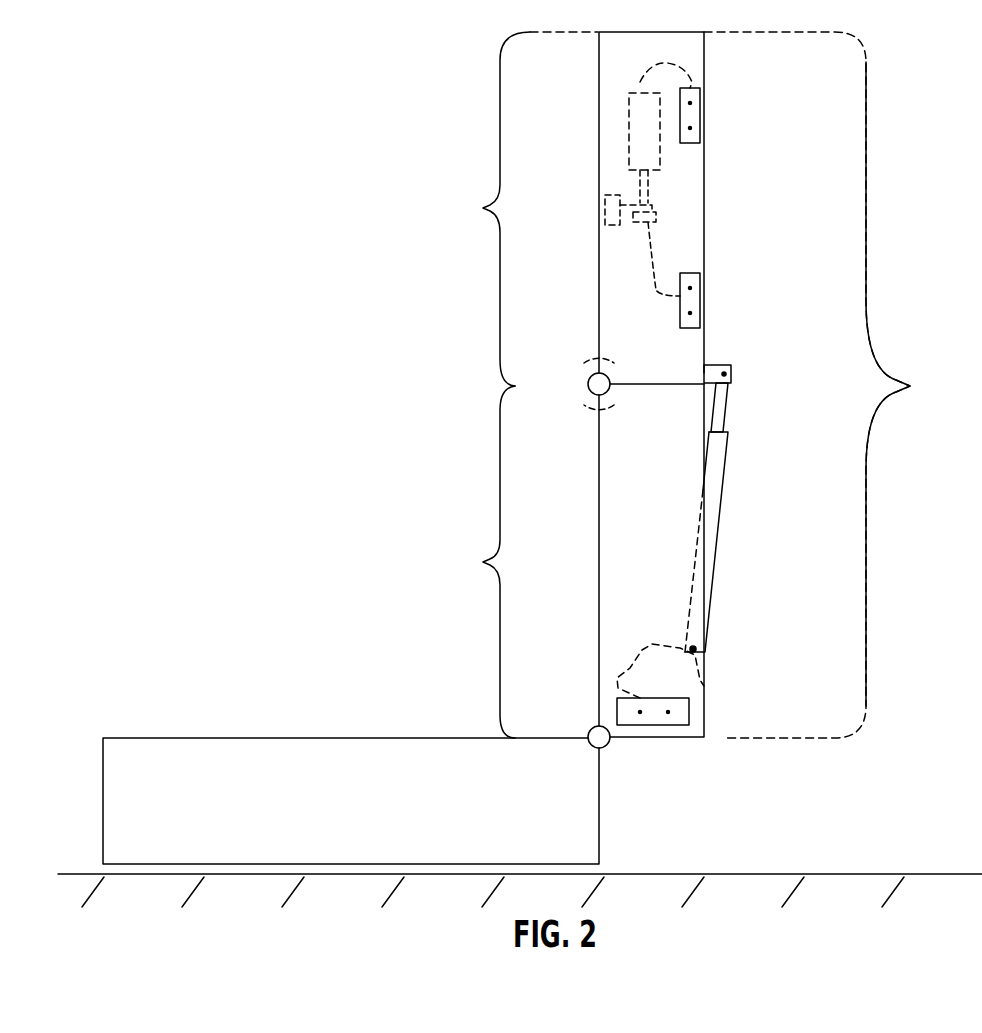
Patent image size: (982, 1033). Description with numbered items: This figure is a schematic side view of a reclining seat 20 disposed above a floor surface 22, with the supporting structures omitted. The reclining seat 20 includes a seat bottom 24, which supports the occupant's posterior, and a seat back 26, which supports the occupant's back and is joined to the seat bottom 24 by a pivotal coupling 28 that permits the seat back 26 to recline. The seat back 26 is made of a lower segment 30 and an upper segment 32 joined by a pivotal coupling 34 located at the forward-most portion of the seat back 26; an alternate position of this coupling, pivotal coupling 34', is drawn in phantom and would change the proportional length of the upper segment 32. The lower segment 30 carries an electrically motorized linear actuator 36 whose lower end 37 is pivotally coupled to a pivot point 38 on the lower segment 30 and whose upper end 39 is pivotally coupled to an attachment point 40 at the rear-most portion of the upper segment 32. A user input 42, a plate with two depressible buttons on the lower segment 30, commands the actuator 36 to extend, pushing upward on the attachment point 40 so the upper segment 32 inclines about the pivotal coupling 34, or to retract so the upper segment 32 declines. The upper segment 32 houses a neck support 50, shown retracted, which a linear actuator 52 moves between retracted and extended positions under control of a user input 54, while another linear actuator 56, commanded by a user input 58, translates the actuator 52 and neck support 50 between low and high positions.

The reclining seat 20 is at (166, 67).
The floor surface 22 is at (868, 873).
The seat bottom 24 is at (277, 737).
The seat back 26 is at (739, 385).
The pivotal coupling 28 is at (589, 728).
The lower segment 30 is at (574, 561).
The upper segment 32 is at (574, 209).
The pivotal coupling 34 is at (608, 374).
The pivotal coupling 34' is at (569, 431).
The actuator 36 is at (726, 479).
The lower end 37 is at (710, 688).
The pivot point 38 is at (698, 648).
The upper end 39 is at (729, 408).
The attachment point 40 is at (718, 364).
The user input 42 is at (670, 727).
The neck support 50 is at (596, 222).
The actuator 52 is at (657, 198).
The user input 54 is at (703, 304).
The actuator 56 is at (620, 136).
The user input 58 is at (702, 115).